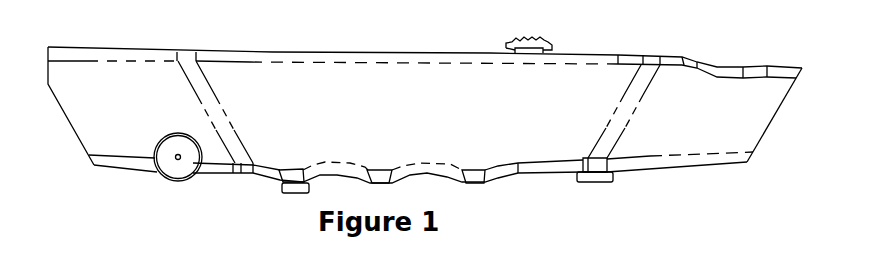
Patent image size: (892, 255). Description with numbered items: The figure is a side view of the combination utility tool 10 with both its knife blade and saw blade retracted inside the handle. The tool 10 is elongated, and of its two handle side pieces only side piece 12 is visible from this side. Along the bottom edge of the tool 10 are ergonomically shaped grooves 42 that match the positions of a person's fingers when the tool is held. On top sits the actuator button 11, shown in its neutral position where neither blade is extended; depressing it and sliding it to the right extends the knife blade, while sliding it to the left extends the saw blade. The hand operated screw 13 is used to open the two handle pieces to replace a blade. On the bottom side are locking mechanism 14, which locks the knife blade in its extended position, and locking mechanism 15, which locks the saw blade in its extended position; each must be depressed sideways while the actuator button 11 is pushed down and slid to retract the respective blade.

The combination utility tool 10 is at (413, 125).
The actuator button 11 is at (510, 38).
The side piece 12 is at (315, 82).
The hand operated screw 13 is at (178, 178).
The locking mechanism 14 is at (598, 182).
The locking mechanism 15 is at (287, 198).
The ergonomically shaped grooves 42 is at (440, 180).